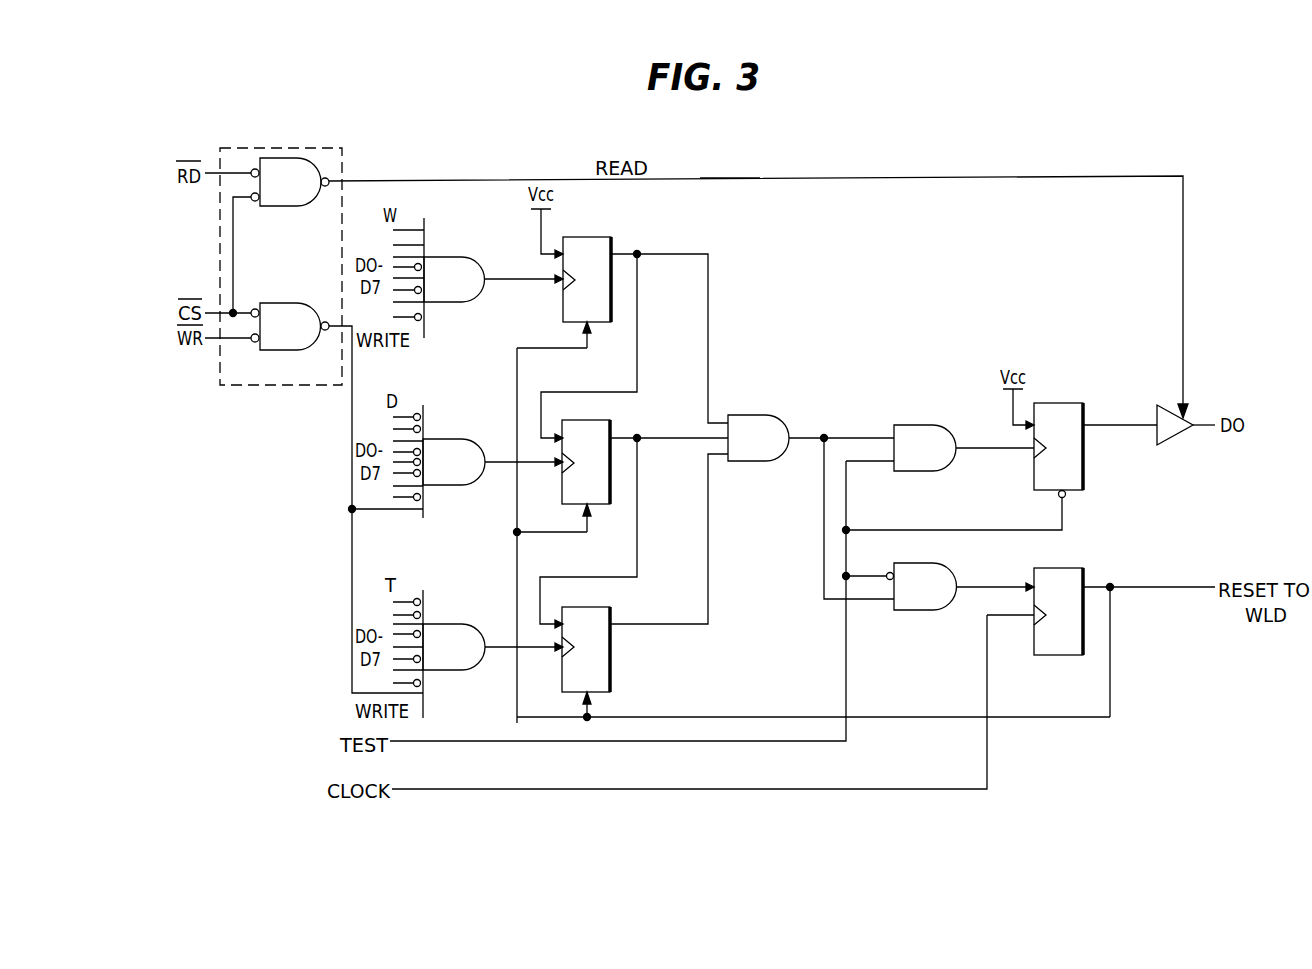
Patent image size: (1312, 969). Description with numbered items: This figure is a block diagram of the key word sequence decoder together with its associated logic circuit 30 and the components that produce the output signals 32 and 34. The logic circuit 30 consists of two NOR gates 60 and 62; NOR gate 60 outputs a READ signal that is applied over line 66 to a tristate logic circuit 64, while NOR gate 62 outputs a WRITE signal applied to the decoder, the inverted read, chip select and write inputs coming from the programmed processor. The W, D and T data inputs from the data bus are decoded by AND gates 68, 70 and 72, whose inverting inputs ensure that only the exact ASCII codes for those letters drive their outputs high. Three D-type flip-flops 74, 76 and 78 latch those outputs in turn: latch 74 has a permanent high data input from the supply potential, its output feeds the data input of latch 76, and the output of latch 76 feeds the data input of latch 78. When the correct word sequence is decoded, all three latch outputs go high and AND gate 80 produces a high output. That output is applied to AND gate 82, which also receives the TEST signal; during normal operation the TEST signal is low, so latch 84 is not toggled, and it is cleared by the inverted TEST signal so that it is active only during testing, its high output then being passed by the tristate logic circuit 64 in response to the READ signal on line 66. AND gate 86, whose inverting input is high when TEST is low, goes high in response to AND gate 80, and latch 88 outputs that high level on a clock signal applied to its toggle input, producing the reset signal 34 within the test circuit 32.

The logic circuit 30 is at (342, 148).
The test circuit 32 is at (798, 150).
The reset output to WLD 34 is at (1183, 586).
The NOR gate 60 is at (292, 206).
The NOR gate 62 is at (314, 303).
The tristate logic circuit 64 is at (1172, 411).
The line 66 is at (930, 181).
The AND gate 68 is at (471, 257).
The AND gate 70 is at (474, 450).
The AND gate 72 is at (474, 641).
The D-type flip-flop 74 is at (610, 237).
The D-type flip-flop 76 is at (609, 436).
The D-type flip-flop 78 is at (606, 662).
The AND gate 80 is at (776, 424).
The AND gate 82 is at (940, 425).
The latch 84 is at (1068, 403).
The AND gate 86 is at (934, 607).
The latch 88 is at (1076, 570).